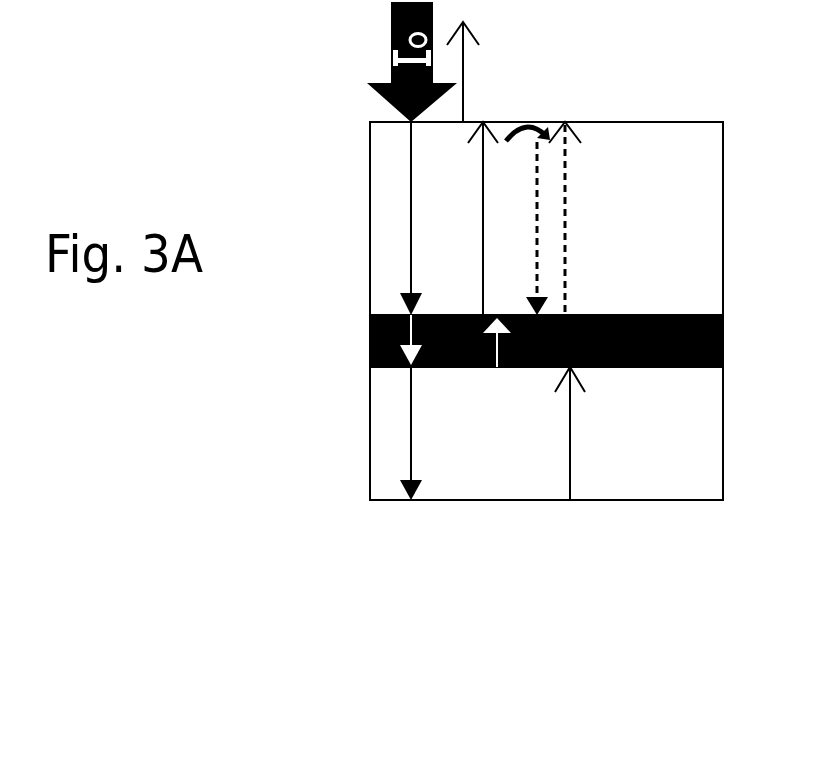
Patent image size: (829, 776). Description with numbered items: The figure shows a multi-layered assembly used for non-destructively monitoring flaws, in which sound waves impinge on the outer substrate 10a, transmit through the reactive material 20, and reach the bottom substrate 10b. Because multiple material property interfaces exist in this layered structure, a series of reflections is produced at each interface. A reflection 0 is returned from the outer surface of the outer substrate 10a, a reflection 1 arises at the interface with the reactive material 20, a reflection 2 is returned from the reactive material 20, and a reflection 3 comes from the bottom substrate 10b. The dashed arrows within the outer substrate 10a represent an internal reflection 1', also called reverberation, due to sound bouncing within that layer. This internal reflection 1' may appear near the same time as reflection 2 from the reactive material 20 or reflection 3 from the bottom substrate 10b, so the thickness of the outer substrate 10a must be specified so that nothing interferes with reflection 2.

The outer substrate 10a is at (546, 218).
The reactive material 20 is at (546, 344).
The bottom substrate 10b is at (546, 438).
The reflection from the outer substrate surface 0 is at (470, 68).
The reflection from the outer substrate / reactive material interface 1 is at (477, 217).
The internal reflection 1' is at (570, 218).
The reflection from the reactive material 2 is at (508, 341).
The reflection from the bottom substrate 3 is at (581, 433).